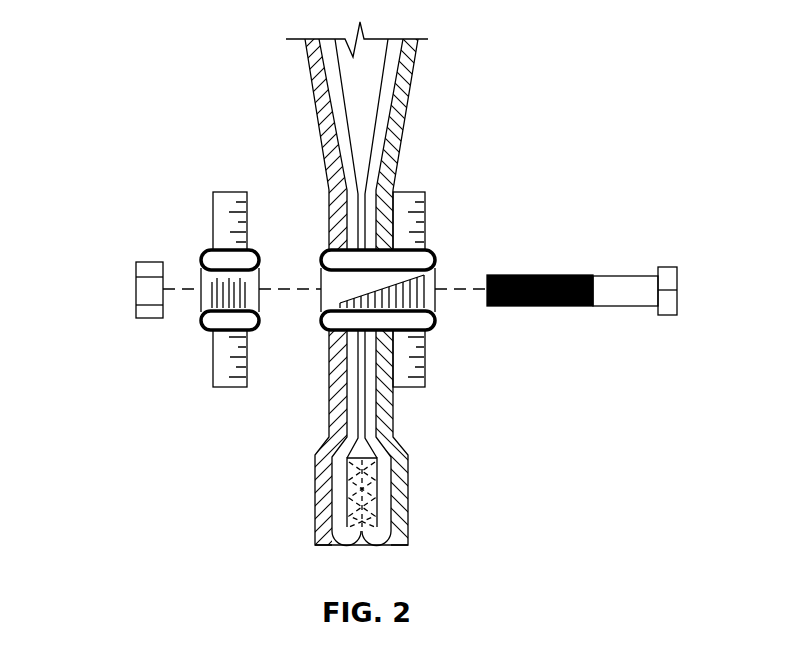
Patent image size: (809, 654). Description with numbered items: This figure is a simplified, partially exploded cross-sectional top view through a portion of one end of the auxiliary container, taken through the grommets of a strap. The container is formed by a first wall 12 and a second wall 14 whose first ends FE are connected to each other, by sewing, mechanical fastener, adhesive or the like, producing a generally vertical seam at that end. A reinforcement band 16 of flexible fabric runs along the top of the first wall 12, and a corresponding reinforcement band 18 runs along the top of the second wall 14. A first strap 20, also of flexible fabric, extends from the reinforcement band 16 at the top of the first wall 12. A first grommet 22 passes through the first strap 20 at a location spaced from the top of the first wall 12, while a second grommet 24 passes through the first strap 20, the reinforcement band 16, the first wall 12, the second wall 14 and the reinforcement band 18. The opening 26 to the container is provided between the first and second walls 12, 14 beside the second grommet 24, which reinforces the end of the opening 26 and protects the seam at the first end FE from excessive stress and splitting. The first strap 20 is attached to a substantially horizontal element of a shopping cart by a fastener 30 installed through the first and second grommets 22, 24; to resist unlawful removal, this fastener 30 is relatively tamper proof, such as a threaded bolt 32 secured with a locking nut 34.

The first wall 12 is at (355, 423).
The second wall 14 is at (367, 407).
The reinforcement band 16 is at (325, 472).
The reinforcement band 18 is at (400, 472).
The first end FE is at (325, 547).
The first strap 20 is at (227, 225).
The first grommet 22 is at (202, 262).
The second grommet 24 is at (437, 262).
The opening 26 is at (373, 86).
The fastener 30 is at (677, 275).
The threaded bolt 32 is at (603, 283).
The locking nut 34 is at (147, 295).